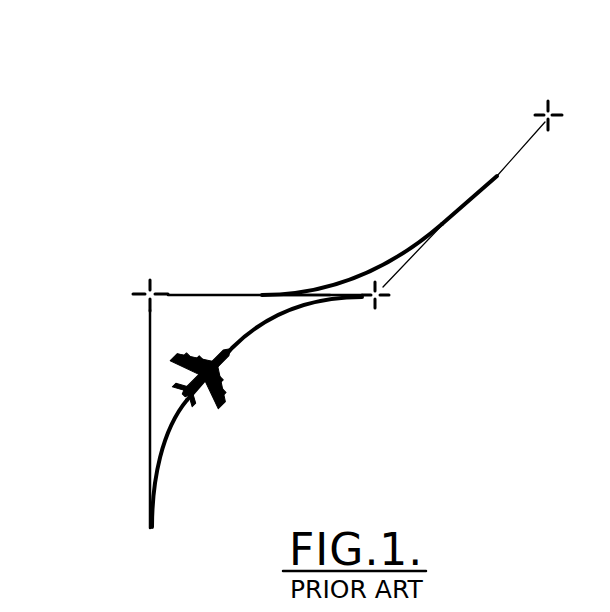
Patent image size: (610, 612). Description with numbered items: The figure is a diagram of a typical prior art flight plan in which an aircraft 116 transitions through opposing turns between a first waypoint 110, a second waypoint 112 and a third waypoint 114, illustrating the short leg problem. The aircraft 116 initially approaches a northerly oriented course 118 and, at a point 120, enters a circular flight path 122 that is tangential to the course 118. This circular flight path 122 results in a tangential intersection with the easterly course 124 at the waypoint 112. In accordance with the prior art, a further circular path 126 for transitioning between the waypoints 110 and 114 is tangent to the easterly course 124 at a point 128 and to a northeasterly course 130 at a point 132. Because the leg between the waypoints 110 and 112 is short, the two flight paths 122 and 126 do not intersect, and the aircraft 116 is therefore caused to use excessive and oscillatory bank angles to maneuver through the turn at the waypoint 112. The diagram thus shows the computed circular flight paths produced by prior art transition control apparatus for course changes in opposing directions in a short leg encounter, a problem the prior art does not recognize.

The first waypoint 110 is at (150, 283).
The second waypoint 112 is at (390, 296).
The third waypoint 114 is at (538, 114).
The aircraft 116 is at (236, 393).
The northerly oriented course 118 is at (150, 379).
The point 120 is at (152, 527).
The circular flight path 122 is at (270, 323).
The easterly course 124 is at (221, 293).
The further circular path 126 is at (373, 268).
The point 128 is at (290, 293).
The northeasterly course 130 is at (497, 177).
The point 132 is at (443, 222).